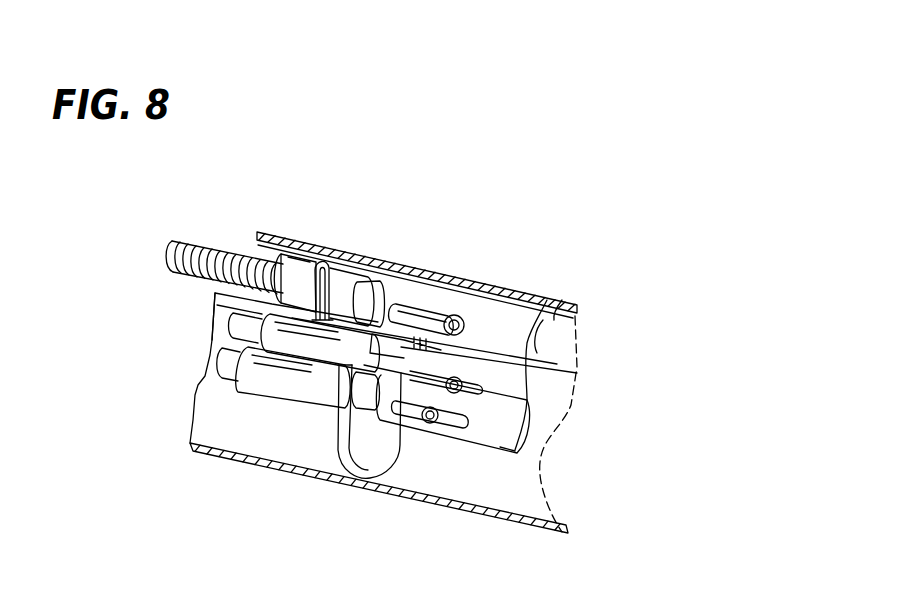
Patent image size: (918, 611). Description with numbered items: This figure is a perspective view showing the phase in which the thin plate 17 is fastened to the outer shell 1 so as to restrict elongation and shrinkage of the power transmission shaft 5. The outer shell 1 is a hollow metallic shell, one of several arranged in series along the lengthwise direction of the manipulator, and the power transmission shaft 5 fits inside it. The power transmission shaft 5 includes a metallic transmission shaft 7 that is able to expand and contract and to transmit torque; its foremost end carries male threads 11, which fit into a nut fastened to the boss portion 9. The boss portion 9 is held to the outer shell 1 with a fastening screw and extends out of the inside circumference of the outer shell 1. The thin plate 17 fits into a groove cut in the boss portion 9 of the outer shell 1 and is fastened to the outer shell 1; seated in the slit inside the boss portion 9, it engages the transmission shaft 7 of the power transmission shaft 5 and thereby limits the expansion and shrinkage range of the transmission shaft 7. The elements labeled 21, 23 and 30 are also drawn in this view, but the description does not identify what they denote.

The outer shell 1 is at (457, 277).
The power transmission shaft 5 is at (513, 387).
The transmission shaft 7 is at (508, 450).
The boss portion 9 is at (323, 243).
The male threads 11 is at (206, 238).
The thin plate 17 is at (332, 265).
The sleeve 21 is at (303, 275).
The slot 23 is at (423, 313).
The pin 30 is at (462, 318).